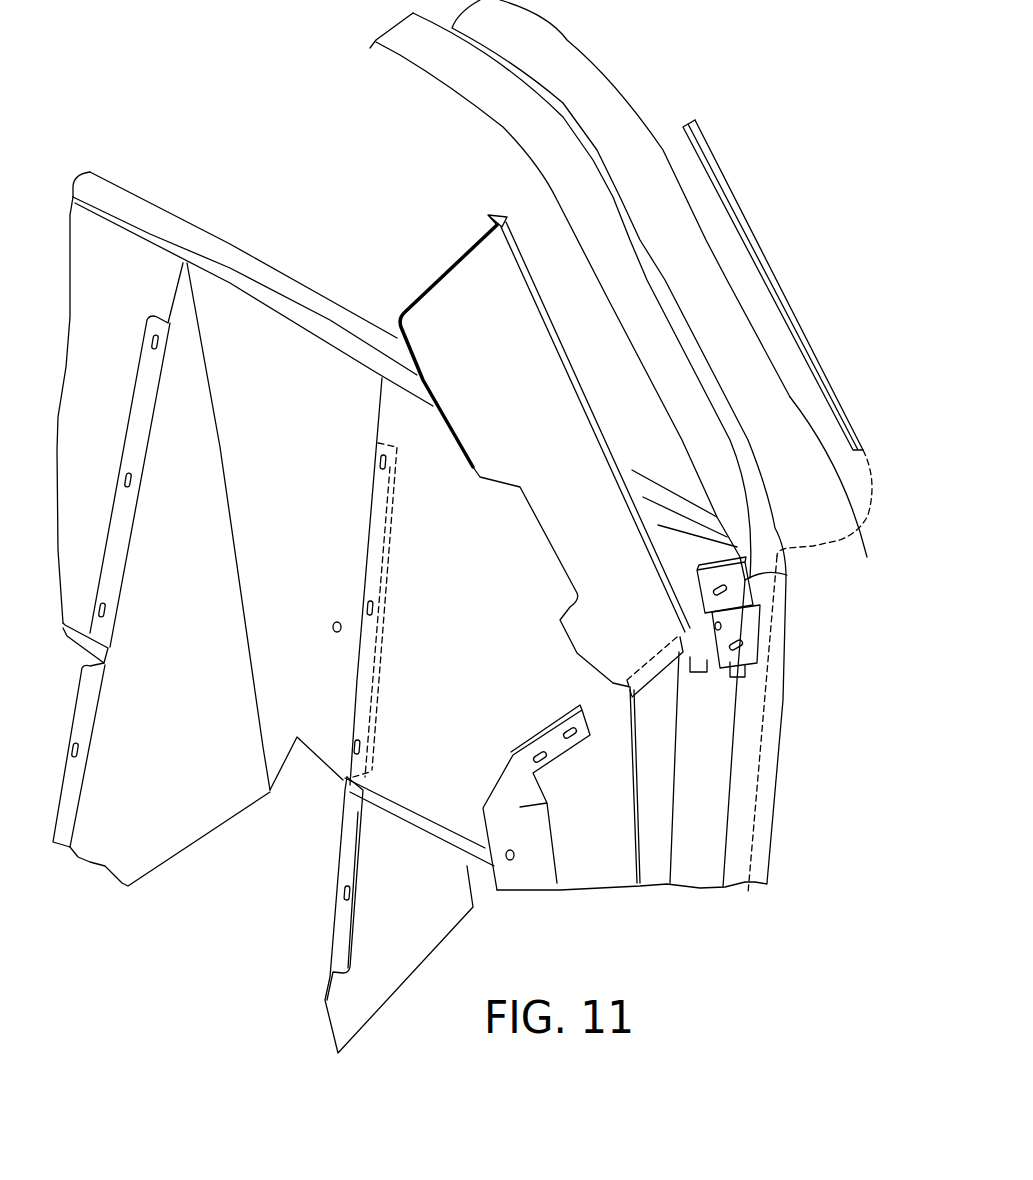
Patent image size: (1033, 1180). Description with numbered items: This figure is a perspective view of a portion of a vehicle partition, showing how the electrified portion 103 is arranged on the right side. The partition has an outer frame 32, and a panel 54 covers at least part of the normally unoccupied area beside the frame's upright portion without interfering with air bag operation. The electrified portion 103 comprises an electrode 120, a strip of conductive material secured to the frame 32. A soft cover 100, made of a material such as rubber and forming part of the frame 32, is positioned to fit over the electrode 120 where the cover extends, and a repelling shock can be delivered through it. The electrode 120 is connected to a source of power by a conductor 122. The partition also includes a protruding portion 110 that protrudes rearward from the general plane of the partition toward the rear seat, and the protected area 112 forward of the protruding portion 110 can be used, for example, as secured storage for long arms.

The outer frame 32 is at (503, 127).
The panel 54 is at (455, 263).
The electrified portion 103 is at (750, 223).
The electrode 120 is at (813, 340).
The cover 100 is at (836, 495).
The conductor 122 is at (808, 546).
The protruding portion 110 is at (332, 710).
The protected area 112 is at (243, 536).